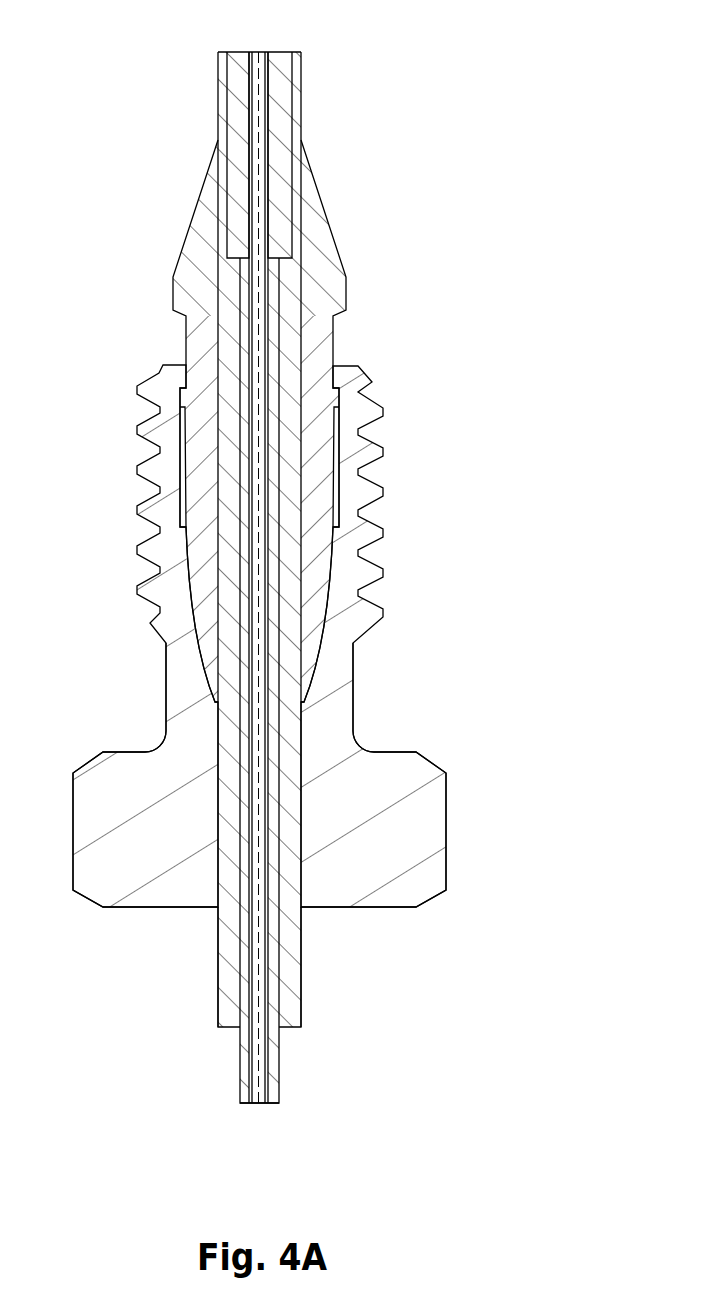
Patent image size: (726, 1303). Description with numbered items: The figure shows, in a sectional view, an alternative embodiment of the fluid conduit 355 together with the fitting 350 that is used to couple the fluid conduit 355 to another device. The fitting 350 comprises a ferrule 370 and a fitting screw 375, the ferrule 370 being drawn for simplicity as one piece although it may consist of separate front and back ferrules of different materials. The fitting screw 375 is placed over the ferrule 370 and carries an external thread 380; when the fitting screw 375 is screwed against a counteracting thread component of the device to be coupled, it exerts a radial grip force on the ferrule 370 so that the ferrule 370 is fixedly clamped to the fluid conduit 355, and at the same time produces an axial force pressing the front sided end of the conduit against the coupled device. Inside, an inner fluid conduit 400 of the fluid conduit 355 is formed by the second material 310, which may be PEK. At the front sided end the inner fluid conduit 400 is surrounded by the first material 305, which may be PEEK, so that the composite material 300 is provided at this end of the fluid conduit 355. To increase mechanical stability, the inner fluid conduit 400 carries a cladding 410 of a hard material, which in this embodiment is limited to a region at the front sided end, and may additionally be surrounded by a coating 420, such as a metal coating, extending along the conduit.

The composite material 300 is at (307, 69).
The first material 305 is at (251, 147).
The second material 310 is at (253, 115).
The fitting 350 is at (424, 262).
The fluid conduit 355 is at (261, 1116).
The ferrule 370 is at (312, 195).
The fitting screw 375 is at (335, 692).
The thread 380 is at (360, 413).
The inner fluid conduit 400 is at (253, 54).
The cladding 410 is at (227, 283).
The coating 420 is at (243, 1055).